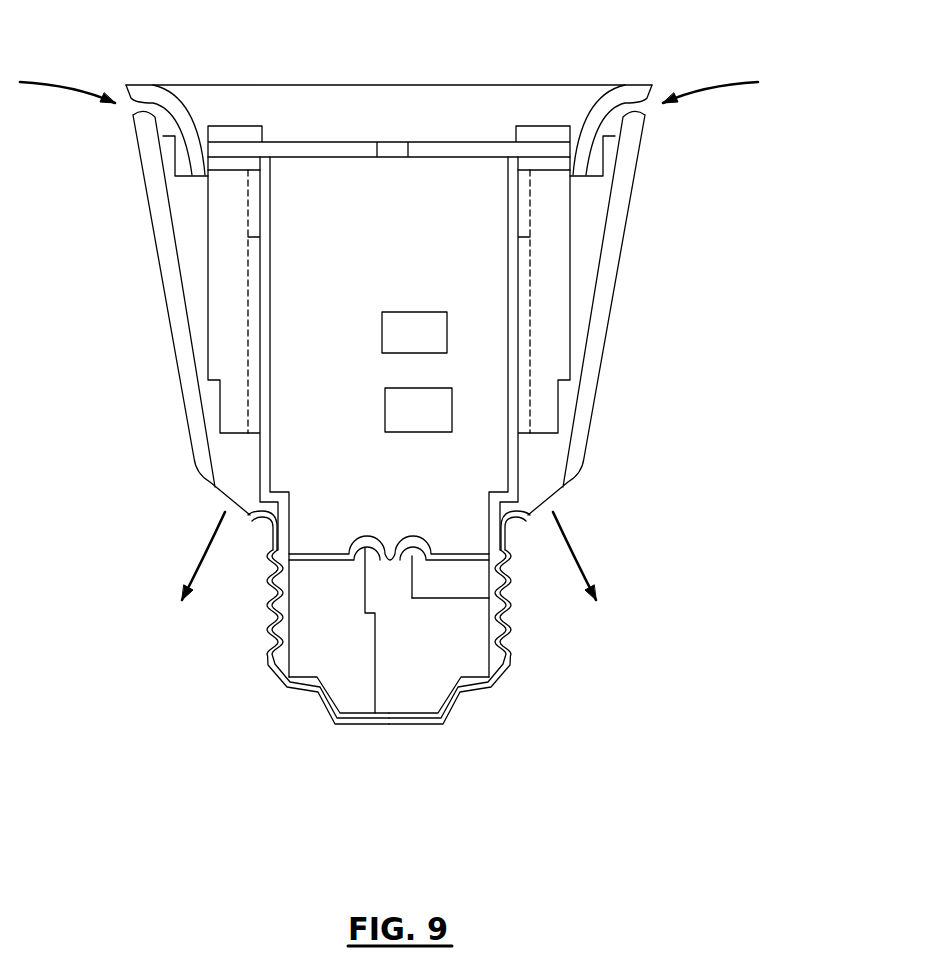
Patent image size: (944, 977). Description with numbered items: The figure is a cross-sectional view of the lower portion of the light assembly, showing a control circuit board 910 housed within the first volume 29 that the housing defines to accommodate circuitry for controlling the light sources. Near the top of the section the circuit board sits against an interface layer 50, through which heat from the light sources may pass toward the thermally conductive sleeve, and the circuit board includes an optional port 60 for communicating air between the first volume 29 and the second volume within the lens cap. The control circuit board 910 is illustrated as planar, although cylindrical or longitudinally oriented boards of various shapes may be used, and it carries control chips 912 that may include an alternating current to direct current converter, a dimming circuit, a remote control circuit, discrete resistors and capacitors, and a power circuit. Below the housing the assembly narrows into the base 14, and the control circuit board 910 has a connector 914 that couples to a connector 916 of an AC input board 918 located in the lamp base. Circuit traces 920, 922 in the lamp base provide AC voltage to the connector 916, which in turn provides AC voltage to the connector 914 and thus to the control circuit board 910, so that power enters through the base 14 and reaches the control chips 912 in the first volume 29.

The base 14 is at (290, 695).
The first volume 29 is at (403, 177).
The interface layer 50 is at (548, 160).
The port 60 is at (393, 150).
The control circuit board 910 is at (473, 272).
The control chips 912 is at (448, 326).
The connector 914 is at (397, 527).
The connector 916 is at (413, 557).
The AC input board 918 is at (427, 685).
The circuit trace 920 is at (375, 692).
The circuit trace 922 is at (413, 598).